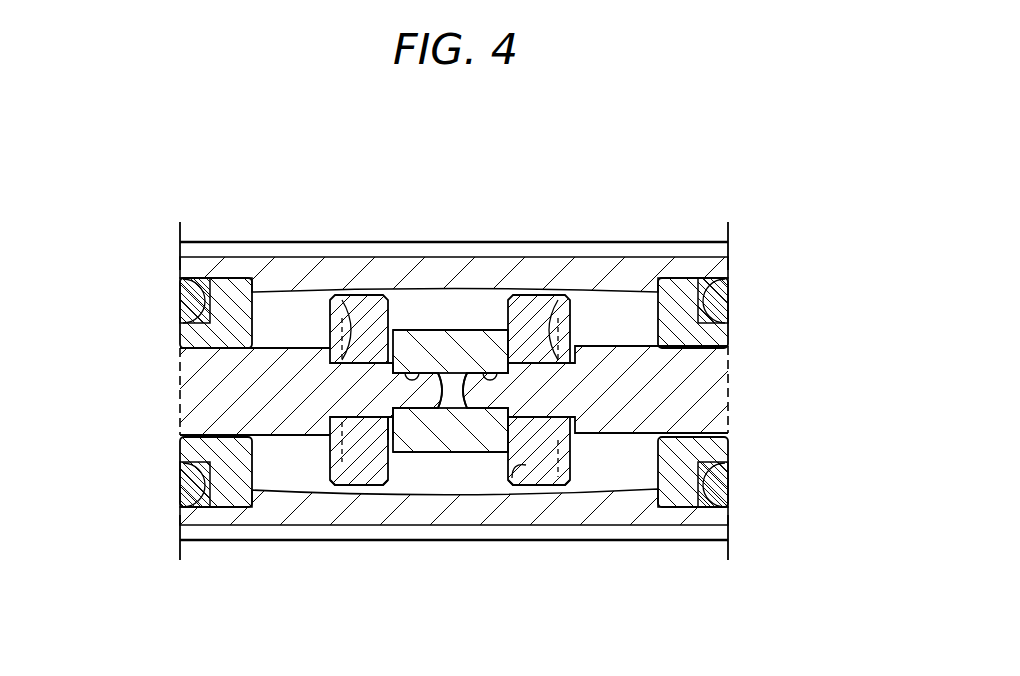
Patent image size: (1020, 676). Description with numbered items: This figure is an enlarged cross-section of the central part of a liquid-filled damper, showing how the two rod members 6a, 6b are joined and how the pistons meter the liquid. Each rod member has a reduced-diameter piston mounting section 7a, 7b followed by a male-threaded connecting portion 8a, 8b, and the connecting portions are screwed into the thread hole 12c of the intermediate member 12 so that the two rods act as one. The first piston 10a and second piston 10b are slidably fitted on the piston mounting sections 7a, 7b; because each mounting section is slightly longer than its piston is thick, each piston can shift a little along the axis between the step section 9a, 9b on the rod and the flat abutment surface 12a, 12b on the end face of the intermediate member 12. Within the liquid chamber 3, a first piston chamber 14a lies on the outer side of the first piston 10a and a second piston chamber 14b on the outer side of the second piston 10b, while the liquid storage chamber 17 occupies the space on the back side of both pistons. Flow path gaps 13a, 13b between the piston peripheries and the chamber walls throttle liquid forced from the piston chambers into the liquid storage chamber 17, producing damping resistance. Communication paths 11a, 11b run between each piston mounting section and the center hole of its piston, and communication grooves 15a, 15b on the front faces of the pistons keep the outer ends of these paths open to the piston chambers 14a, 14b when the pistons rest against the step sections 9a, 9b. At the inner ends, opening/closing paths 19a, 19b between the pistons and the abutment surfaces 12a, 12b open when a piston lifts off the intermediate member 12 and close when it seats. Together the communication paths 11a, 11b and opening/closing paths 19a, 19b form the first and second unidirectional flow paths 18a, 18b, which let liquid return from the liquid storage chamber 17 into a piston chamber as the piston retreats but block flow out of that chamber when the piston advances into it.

The liquid chamber 3 is at (648, 308).
The first rod member 6a is at (182, 385).
The second rod member 6b is at (730, 388).
The first piston mounting section 7a is at (347, 323).
The second piston mounting section 7b is at (550, 325).
The first connecting portion 8a is at (412, 479).
The second connecting portion 8b is at (504, 474).
The first step section 9a is at (342, 330).
The second step section 9b is at (578, 330).
The first piston 10a is at (378, 445).
The second piston 10b is at (533, 470).
The first communication path 11a is at (344, 478).
The second communication path 11b is at (565, 462).
The intermediate member 12 is at (453, 352).
The first abutment surface 12a is at (372, 365).
The second abutment surface 12b is at (540, 365).
The thread hole 12c is at (418, 368).
The first flow path gap 13a is at (358, 484).
The second flow path gap 13b is at (550, 487).
The first piston chamber 14a is at (288, 322).
The second piston chamber 14b is at (620, 322).
The first communication groove 15a is at (340, 430).
The second communication groove 15b is at (567, 438).
The liquid storage chamber 17 is at (434, 305).
The first unidirectional flow path 18a is at (427, 392).
The second unidirectional flow path 18b is at (482, 390).
The first opening/closing path 19a is at (390, 433).
The second opening/closing path 19b is at (513, 483).